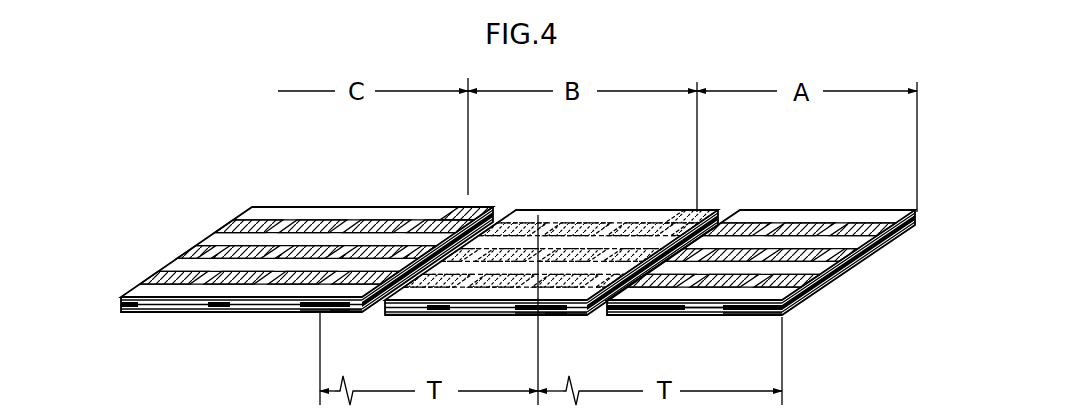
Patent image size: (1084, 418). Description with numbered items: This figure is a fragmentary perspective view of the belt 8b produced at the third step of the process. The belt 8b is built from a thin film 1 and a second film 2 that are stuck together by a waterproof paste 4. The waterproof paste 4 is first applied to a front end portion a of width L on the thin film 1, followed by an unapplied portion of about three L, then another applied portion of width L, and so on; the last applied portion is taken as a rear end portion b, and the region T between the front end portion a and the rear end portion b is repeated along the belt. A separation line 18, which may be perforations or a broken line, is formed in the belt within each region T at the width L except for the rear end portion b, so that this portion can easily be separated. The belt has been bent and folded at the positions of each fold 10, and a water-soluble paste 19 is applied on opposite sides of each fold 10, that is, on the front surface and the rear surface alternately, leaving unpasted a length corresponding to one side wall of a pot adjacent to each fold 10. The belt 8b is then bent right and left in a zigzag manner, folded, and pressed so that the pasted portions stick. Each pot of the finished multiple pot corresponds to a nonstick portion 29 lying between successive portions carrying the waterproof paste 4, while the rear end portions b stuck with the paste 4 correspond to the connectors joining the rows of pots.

The thin film 1 is at (132, 311).
The film 2 is at (120, 297).
The waterproof paste 4 is at (121, 303).
The belt 8b is at (470, 318).
The fold 10 is at (466, 208).
The separation line 18 is at (323, 222).
The water-soluble paste 19 is at (233, 230).
The nonstick portion 29 is at (721, 318).
The front end portion a is at (309, 308).
The rear end portion b is at (331, 316).